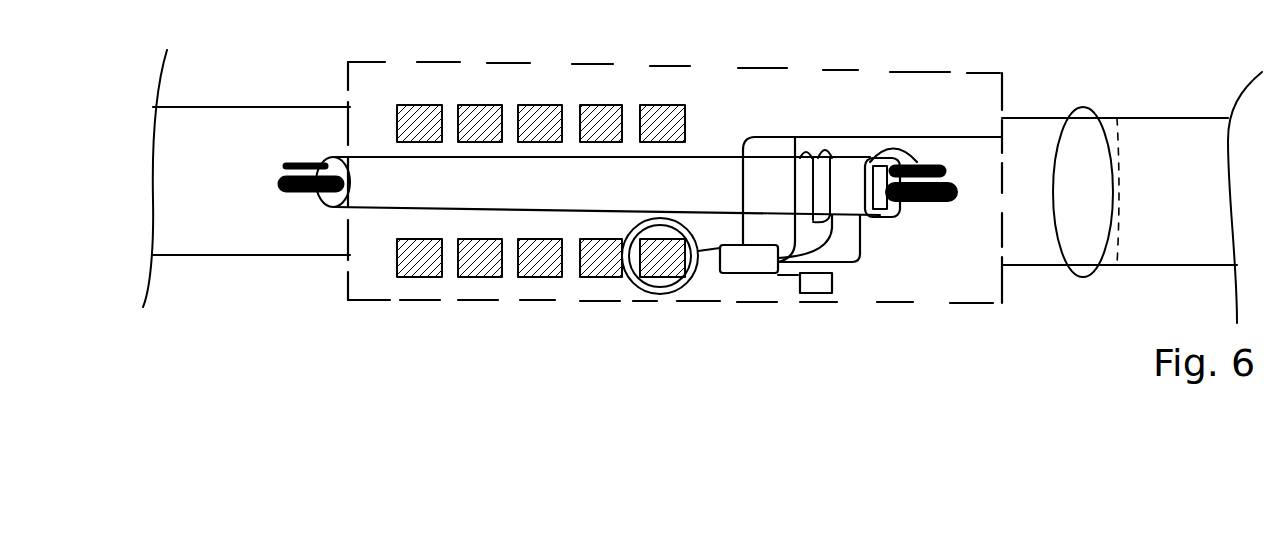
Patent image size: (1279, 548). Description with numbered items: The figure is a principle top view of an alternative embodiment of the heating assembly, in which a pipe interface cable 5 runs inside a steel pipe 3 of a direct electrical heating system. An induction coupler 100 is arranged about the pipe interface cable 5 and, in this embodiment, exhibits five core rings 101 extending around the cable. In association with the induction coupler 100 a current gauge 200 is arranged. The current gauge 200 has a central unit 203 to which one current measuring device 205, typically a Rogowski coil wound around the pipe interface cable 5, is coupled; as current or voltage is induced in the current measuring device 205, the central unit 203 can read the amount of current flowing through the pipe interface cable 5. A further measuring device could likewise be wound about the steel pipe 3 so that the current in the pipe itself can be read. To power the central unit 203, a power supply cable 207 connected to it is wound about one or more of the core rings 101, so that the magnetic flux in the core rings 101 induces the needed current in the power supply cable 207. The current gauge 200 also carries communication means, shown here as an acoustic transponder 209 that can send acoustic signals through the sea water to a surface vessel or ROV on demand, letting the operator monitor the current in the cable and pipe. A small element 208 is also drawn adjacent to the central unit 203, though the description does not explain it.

The steel pipe 3 is at (1162, 135).
The pipe interface cable 5 is at (373, 195).
The induction coupler 100 is at (473, 300).
The core rings 101 is at (640, 292).
The current gauge 200 is at (839, 201).
The central unit 203 is at (737, 292).
The current measuring device 205 is at (800, 137).
The power supply cable 207 is at (720, 270).
The fastening element 208 is at (813, 293).
The acoustic transponder 209 is at (930, 167).